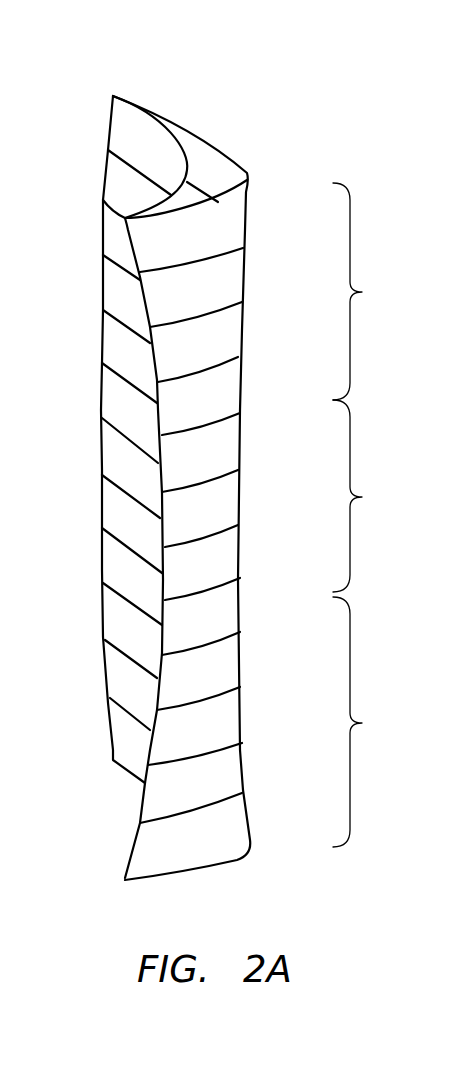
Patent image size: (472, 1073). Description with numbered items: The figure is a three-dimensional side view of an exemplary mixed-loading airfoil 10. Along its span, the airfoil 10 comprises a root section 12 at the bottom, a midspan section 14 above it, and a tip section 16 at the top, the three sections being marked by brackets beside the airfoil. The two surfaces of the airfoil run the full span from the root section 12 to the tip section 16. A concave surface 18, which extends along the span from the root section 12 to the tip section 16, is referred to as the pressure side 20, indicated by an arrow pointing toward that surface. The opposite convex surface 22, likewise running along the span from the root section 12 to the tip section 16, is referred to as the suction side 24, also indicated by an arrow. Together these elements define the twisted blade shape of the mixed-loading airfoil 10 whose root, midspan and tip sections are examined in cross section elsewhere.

The mixed-loading airfoil 10 is at (212, 448).
The root section 12 is at (367, 722).
The midspan section 14 is at (367, 496).
The tip section 16 is at (367, 291).
The concave surface 18 is at (120, 345).
The pressure side 20 is at (118, 469).
The convex surface 22 is at (225, 340).
The suction side 24 is at (236, 507).